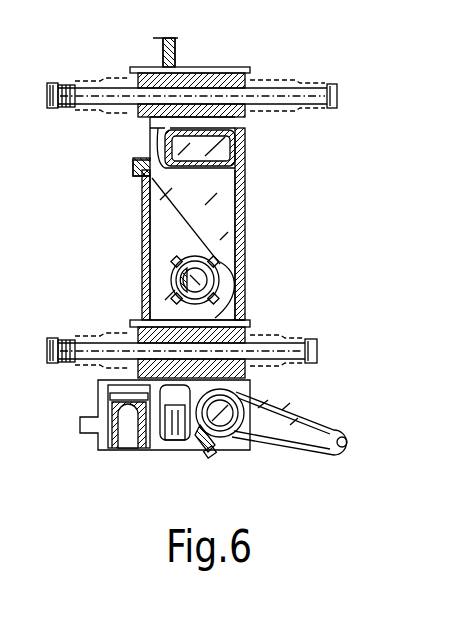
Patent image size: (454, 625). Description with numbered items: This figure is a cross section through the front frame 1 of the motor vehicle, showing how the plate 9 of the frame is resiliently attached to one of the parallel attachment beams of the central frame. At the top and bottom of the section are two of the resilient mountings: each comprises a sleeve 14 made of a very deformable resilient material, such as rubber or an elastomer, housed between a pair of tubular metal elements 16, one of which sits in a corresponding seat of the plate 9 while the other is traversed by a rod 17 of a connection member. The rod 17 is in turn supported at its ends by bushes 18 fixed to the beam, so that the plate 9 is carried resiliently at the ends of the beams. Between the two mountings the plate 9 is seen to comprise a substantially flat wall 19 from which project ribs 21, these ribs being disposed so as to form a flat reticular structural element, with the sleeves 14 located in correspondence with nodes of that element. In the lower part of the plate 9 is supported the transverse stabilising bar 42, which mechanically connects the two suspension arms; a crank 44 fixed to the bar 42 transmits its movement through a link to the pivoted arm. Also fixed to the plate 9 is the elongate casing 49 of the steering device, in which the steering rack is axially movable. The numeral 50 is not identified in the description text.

The front frame 1 is at (296, 243).
The plate 9 is at (246, 214).
The sleeve 14 is at (248, 76).
The tubular metal element 16 is at (210, 72).
The rod 17 is at (113, 88).
The bush 18 is at (85, 82).
The flat wall 19 is at (246, 246).
The rib 21 is at (213, 163).
The transverse stabilising bar 42 is at (228, 420).
The crank 44 is at (290, 432).
The casing 49 is at (195, 262).
The bearing seat 50 is at (152, 260).